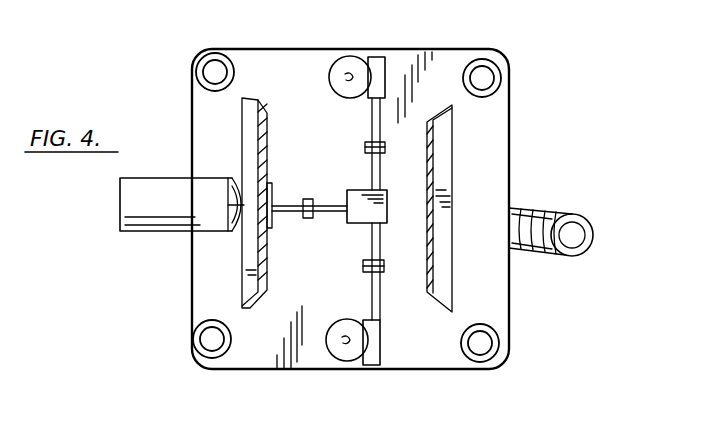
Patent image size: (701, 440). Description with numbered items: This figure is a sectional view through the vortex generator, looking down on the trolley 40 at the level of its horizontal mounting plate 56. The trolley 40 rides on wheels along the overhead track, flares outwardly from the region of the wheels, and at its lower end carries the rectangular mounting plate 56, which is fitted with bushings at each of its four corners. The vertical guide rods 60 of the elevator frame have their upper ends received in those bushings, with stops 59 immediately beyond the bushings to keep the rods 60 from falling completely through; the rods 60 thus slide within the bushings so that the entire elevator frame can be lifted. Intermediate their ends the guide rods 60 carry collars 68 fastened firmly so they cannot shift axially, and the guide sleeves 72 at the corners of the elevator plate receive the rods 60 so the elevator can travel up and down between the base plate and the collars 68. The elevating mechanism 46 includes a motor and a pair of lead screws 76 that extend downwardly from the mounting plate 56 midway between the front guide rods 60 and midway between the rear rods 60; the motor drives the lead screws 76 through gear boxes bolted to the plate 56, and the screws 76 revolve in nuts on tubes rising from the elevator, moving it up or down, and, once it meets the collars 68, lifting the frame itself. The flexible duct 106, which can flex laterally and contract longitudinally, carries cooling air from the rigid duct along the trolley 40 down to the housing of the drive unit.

The trolley 40 is at (530, 142).
The elevating mechanism 46 is at (314, 176).
The mounting plate 56 is at (306, 369).
The stops 59 is at (229, 55).
The guide rods 60 is at (213, 72).
The collars 68 is at (145, 212).
The guide sleeves 72 is at (377, 57).
The lead screws 76 is at (347, 72).
The flexible duct 106 is at (548, 212).